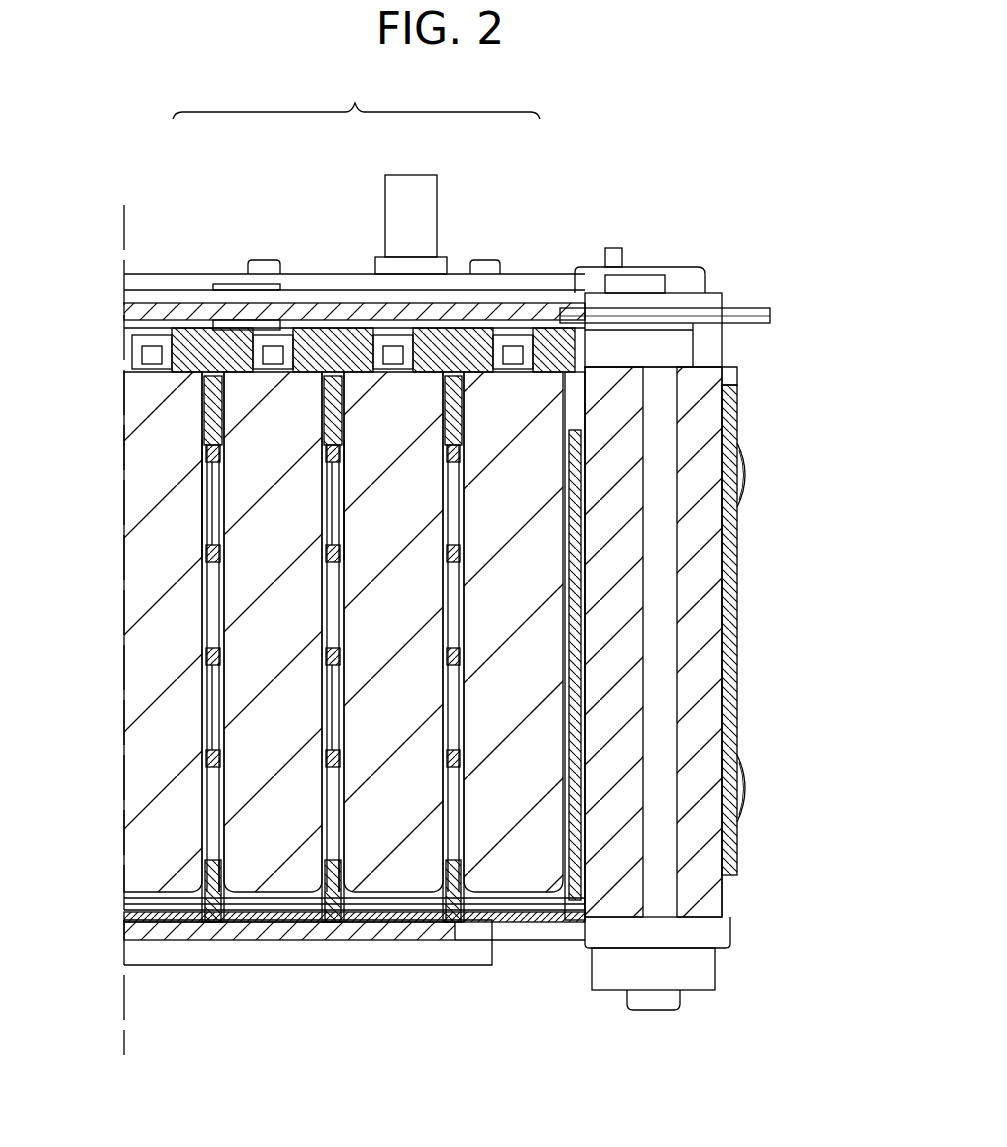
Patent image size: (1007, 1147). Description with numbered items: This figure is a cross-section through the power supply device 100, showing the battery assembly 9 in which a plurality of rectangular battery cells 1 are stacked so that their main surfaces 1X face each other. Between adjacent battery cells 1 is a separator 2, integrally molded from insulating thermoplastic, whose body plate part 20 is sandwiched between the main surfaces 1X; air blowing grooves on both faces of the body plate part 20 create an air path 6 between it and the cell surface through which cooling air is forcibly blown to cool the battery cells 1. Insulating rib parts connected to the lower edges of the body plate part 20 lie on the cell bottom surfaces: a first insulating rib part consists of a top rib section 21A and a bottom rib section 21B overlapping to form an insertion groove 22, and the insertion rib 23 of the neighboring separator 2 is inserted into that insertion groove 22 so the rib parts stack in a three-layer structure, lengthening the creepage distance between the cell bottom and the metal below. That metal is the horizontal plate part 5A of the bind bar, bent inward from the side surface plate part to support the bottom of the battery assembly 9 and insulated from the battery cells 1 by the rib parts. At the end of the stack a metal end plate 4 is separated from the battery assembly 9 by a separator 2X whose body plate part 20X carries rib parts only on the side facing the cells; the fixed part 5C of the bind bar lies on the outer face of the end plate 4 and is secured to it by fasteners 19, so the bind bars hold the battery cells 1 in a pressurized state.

The power supply device 100 is at (690, 195).
The battery assembly 9 is at (356, 90).
The battery cell 1 is at (156, 427).
The main surface 1X is at (216, 495).
The separator 2 is at (290, 337).
The separator 2X is at (553, 323).
The air path 6 is at (205, 612).
The body plate part 20 is at (205, 717).
The body plate part 20X is at (585, 612).
The top rib section 21A is at (302, 892).
The bottom rib section 21B is at (253, 932).
The insertion groove 22 is at (323, 928).
The insertion rib 23 is at (292, 928).
The end plate 4 is at (703, 712).
The horizontal plate part 5A is at (180, 932).
The fixed part 5C is at (740, 600).
The fastener 19 is at (750, 780).